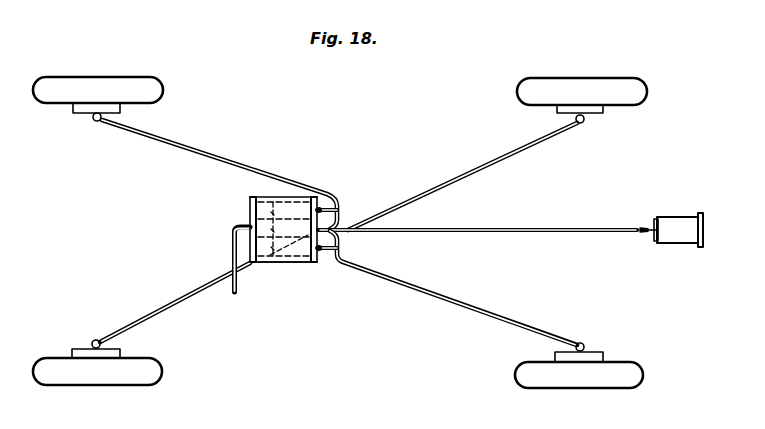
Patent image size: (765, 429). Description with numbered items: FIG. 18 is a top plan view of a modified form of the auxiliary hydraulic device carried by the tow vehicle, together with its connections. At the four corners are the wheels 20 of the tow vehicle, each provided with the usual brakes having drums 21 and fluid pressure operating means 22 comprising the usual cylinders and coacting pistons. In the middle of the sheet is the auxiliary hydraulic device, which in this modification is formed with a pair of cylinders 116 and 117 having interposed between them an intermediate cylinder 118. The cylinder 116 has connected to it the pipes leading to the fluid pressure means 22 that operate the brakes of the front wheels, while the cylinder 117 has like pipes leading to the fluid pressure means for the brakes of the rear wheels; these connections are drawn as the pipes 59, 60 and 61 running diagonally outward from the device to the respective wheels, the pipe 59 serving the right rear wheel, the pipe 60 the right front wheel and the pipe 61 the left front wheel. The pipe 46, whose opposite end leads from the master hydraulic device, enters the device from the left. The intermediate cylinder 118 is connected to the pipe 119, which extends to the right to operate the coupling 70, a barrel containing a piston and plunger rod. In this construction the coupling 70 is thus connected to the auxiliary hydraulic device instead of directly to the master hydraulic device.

The wheels 20 is at (86, 80).
The drums 21 is at (122, 108).
The fluid pressure operating means 22 is at (96, 121).
The pipe 46 is at (232, 243).
The pipe 59 is at (476, 169).
The pipe 60 is at (206, 157).
The pipe 61 is at (200, 296).
The coupling 70 is at (680, 237).
The cylinder 116 is at (275, 226).
The cylinder 117 is at (295, 253).
The intermediate cylinder 118 is at (265, 225).
The pipe 119 is at (454, 233).